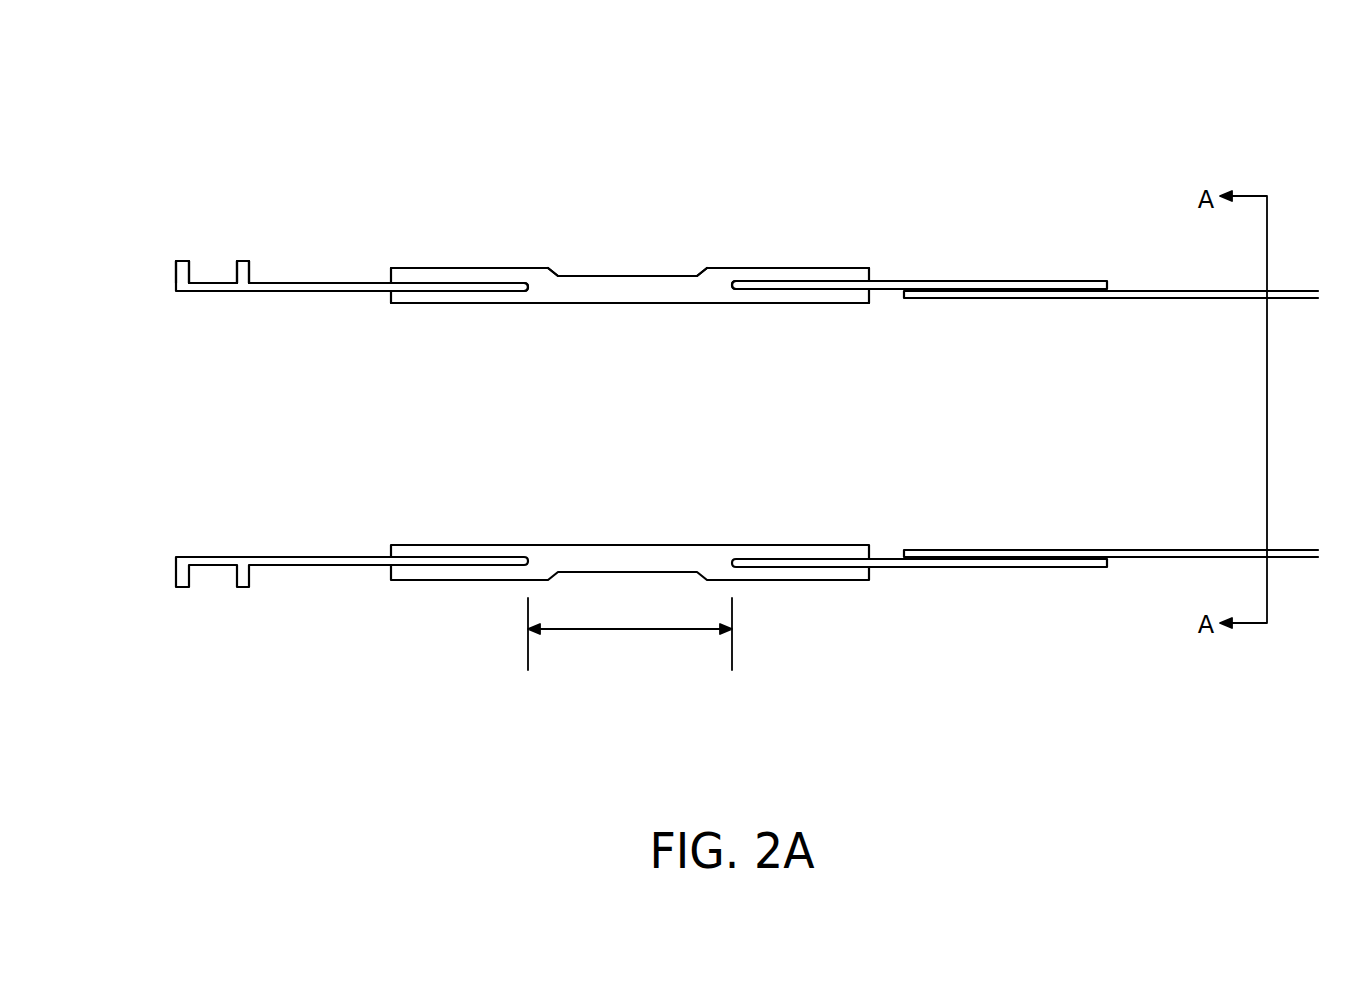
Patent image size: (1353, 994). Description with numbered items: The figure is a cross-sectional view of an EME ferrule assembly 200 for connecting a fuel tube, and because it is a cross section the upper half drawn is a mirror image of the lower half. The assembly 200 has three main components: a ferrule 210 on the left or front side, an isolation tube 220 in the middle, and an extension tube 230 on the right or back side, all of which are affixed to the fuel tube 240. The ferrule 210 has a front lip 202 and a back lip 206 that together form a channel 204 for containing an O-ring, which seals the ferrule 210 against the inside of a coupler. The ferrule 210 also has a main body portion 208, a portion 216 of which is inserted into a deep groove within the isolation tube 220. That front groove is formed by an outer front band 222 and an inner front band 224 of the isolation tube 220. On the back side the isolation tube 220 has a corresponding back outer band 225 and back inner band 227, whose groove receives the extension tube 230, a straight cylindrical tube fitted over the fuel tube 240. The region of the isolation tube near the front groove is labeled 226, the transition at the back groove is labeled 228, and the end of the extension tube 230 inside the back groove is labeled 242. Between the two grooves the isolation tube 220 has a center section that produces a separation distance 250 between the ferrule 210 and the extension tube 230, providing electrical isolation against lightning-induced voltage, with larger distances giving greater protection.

The EME ferrule assembly 200 is at (437, 108).
The front lip 202 is at (173, 281).
The channel 204 is at (210, 282).
The back lip 206 is at (252, 270).
The main body portion 208 is at (327, 282).
The ferrule 210 is at (295, 292).
The inserted portion of main body 216 is at (495, 285).
The isolation tube 220 is at (657, 305).
The outer front band 222 is at (422, 273).
The inner front band 224 is at (455, 298).
The back outer band 225 is at (835, 277).
The recessed neck portion 226 is at (560, 274).
The back inner band 227 is at (842, 298).
The shoulder 228 is at (703, 272).
The extension tube 230 is at (950, 280).
The fuel tube 240 is at (1217, 302).
The end of second plate 242 is at (768, 288).
The separation distance 250 is at (630, 639).